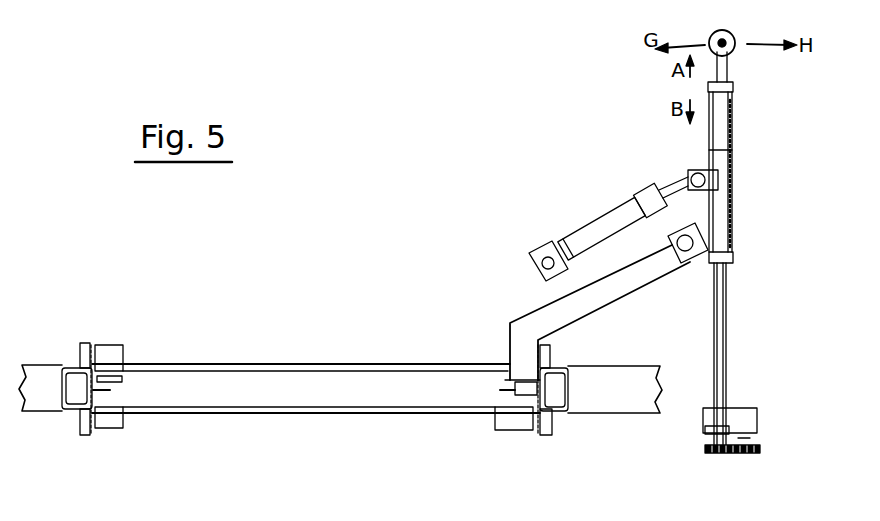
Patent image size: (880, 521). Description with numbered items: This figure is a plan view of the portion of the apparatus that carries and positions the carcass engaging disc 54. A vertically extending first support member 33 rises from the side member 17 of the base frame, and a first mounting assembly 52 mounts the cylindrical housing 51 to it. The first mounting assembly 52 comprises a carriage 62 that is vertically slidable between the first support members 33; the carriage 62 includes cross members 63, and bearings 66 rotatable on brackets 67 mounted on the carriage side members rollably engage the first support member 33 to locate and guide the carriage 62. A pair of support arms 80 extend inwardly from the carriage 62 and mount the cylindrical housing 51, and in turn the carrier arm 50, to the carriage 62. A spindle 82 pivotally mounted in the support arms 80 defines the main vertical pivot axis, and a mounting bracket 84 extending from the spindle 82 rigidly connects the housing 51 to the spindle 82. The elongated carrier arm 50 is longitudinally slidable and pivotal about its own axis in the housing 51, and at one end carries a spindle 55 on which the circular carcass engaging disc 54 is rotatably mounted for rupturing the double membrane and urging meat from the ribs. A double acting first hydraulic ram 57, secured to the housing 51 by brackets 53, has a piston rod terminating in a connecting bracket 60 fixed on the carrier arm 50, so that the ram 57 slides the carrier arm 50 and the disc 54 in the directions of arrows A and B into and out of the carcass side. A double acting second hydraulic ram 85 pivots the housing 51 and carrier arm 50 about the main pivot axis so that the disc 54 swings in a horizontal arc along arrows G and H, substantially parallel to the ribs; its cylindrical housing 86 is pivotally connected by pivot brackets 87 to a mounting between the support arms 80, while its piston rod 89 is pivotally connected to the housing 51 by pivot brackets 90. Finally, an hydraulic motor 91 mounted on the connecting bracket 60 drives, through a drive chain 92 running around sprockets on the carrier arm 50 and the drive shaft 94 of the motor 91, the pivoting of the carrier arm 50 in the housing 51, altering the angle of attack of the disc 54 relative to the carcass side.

The side member 17 is at (40, 399).
The first support member 33 is at (65, 372).
The carrier arm 50 is at (727, 70).
The cylindrical housing 51 is at (734, 151).
The first mounting assembly 52 is at (318, 444).
The brackets 53 is at (733, 96).
The carcass engaging disc 54 is at (735, 48).
The spindle 55 is at (729, 36).
The first hydraulic ram 57 is at (735, 206).
The connecting bracket 60 is at (708, 431).
The carriage 62 is at (258, 380).
The cross members 63 is at (373, 386).
The bearings 66 is at (85, 343).
The brackets 67 is at (112, 360).
The support arms 80 is at (534, 313).
The spindle 82 is at (700, 256).
The mounting bracket 84 is at (705, 264).
The second hydraulic ram 85 is at (618, 216).
The cylindrical housing 86 is at (583, 229).
The pivot brackets 87 is at (549, 247).
The piston rod 89 is at (657, 190).
The pivot brackets 90 is at (696, 172).
The hydraulic motor 91 is at (745, 418).
The drive chain 92 is at (729, 456).
The drive shaft 94 is at (748, 440).